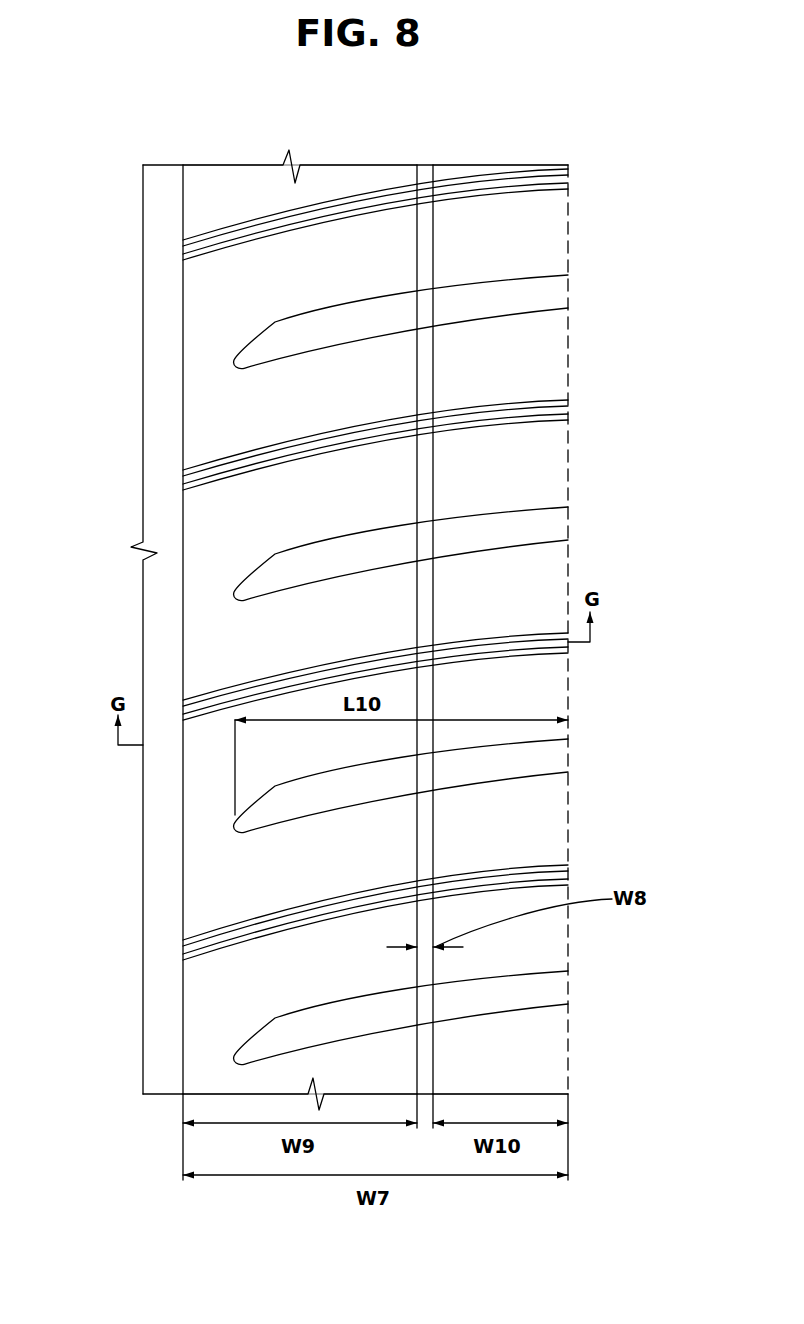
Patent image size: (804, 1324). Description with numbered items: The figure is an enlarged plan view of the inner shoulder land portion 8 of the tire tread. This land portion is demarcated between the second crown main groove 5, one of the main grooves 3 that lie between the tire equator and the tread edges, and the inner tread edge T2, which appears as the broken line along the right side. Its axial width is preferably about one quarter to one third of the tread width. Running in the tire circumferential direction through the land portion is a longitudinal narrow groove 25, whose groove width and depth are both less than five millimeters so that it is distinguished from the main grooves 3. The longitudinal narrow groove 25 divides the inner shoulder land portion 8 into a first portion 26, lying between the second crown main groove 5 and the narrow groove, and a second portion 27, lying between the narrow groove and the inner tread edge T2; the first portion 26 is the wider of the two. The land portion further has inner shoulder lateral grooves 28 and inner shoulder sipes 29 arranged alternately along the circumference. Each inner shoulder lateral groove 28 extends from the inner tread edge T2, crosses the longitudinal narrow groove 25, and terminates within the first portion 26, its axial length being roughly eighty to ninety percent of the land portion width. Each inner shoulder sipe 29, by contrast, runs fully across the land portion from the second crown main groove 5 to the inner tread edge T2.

The main groove 3 is at (349, 606).
The second crown main groove 5 is at (160, 195).
The inner shoulder land portion 8 is at (375, 584).
The longitudinal narrow groove 25 is at (427, 367).
The first portion 26 is at (343, 250).
The second portion 27 is at (500, 604).
The inner shoulder lateral groove 28 is at (382, 308).
The inner shoulder sipe 29 is at (246, 227).
The inner tread edge T2 is at (570, 200).